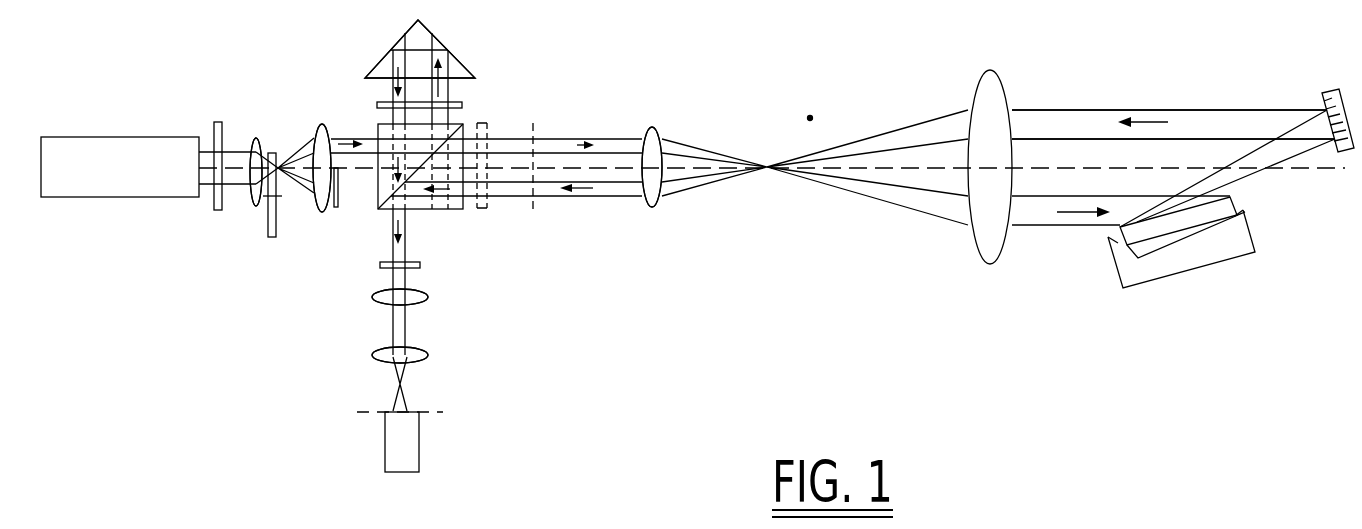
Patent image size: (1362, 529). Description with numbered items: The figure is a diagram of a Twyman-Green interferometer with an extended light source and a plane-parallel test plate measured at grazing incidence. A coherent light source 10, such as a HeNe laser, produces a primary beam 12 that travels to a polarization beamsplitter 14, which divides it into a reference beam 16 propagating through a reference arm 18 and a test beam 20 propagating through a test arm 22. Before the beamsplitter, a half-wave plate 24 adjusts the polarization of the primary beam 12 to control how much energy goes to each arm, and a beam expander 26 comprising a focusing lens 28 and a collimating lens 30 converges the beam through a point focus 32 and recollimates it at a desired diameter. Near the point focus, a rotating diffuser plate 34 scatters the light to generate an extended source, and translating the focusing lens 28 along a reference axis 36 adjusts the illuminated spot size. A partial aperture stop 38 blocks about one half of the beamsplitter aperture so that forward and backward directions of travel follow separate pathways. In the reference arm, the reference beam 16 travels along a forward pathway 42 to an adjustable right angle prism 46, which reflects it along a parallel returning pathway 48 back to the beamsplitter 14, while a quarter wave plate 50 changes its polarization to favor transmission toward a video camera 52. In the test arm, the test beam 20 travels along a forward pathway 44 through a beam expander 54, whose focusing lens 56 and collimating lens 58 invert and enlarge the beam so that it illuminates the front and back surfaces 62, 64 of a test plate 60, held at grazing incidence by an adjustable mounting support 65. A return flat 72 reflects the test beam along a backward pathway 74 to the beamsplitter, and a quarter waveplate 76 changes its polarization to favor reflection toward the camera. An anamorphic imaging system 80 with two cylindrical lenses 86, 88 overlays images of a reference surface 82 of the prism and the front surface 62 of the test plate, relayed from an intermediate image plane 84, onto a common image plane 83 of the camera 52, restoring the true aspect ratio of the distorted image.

The coherent light source 10 is at (134, 180).
The primary beam 12 is at (233, 191).
The polarization beamsplitter 14 is at (445, 212).
The reference beam 16 is at (462, 118).
The reference arm 18 is at (308, 91).
The test beam 20 is at (640, 137).
The test arm 22 is at (588, 203).
The half-wave plate 24 is at (214, 123).
The beam expander 26 is at (250, 108).
The focusing lens 28 is at (257, 206).
The collimating lens 30 is at (292, 218).
The point focus 32 is at (280, 166).
The rotating diffuser plate 34 is at (271, 238).
The reference axis 36 is at (360, 174).
The partial aperture stop 38 is at (321, 211).
The forward pathway 42 is at (450, 88).
The forward pathway 44 is at (511, 131).
The adjustable right angle prism 46 is at (411, 26).
The returning pathway 48 is at (393, 86).
The quarter wave plate 50 is at (376, 106).
The video camera 52 is at (388, 453).
The beam expander 54 is at (810, 118).
The focusing lens 56 is at (656, 208).
The collimating lens 58 is at (983, 247).
The test plate 60 is at (1238, 197).
The front surface 62 is at (1172, 212).
The back surface 64 is at (1217, 263).
The adjustable mounting support 65 is at (1252, 244).
The return flat 72 is at (1335, 92).
The backward pathway 74 is at (1083, 110).
The quarter waveplate 76 is at (490, 208).
The anamorphic imaging system 80 is at (421, 323).
The reference surface 82 is at (428, 36).
The common image plane 83 is at (443, 410).
The intermediate image plane 84 is at (536, 121).
The cylindrical lens 86 is at (372, 292).
The cylindrical lens 88 is at (372, 352).